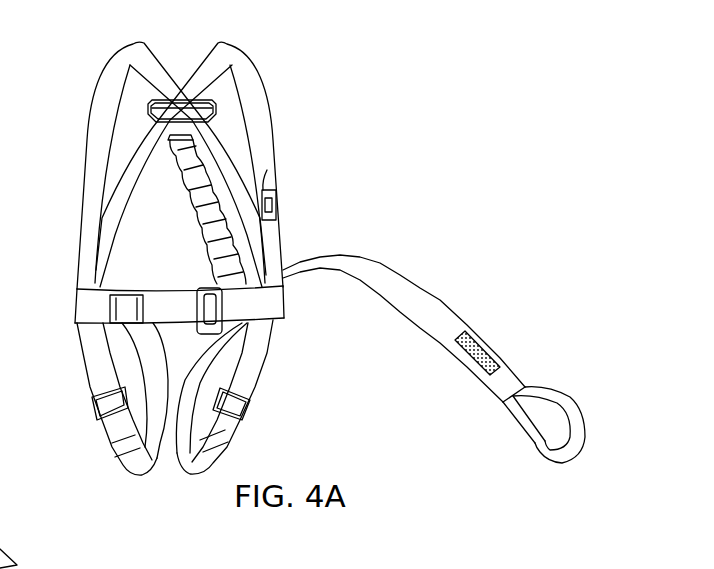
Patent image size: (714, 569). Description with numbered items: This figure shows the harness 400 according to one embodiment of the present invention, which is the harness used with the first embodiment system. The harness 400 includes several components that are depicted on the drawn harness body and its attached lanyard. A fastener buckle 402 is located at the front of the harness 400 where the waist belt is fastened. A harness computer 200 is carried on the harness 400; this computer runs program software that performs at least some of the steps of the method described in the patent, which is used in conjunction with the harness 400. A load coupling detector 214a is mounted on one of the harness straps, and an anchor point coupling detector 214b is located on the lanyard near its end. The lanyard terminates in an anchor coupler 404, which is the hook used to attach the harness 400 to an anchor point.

The harness 400 is at (358, 33).
The harness computer 200 is at (276, 172).
The load coupling detector 214a is at (277, 200).
The fastener buckle 402 is at (201, 286).
The anchor point coupling detector 214b is at (470, 340).
The anchor coupler 404 is at (555, 392).